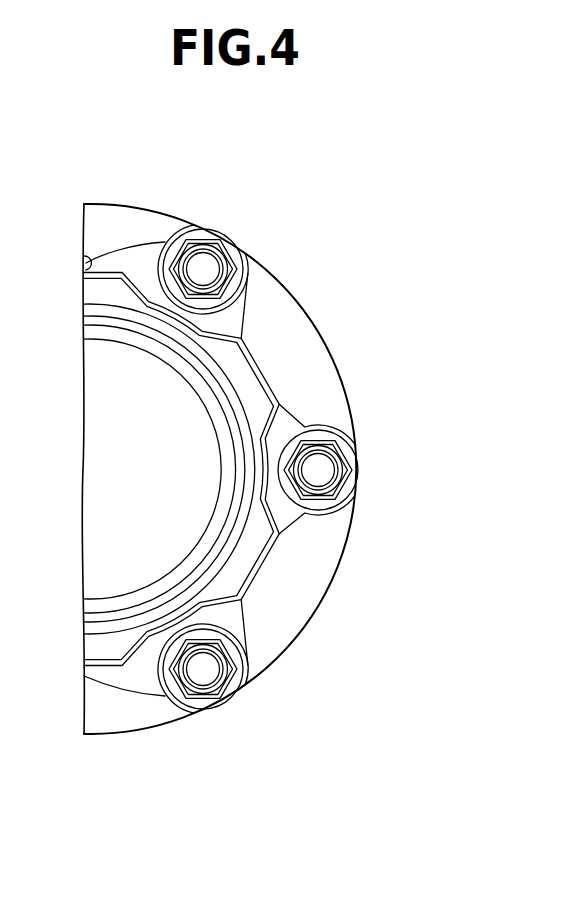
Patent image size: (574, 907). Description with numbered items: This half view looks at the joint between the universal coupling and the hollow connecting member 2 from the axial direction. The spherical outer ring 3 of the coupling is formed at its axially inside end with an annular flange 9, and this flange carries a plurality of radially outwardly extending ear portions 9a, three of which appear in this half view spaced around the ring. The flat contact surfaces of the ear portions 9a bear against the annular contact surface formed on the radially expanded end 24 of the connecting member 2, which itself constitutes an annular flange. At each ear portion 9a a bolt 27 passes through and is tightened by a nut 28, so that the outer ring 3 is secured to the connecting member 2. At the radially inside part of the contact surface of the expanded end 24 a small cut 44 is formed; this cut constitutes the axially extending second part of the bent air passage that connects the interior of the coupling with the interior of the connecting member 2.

The hollow connecting member 2 is at (303, 588).
The spherical outer ring 3 is at (247, 377).
The annular flange 9 is at (252, 352).
The ear portions 9a is at (240, 304).
The radially expanded end 24 is at (148, 228).
The bolts 27 is at (208, 268).
The nuts 28 is at (206, 243).
The small cut 44 is at (87, 266).